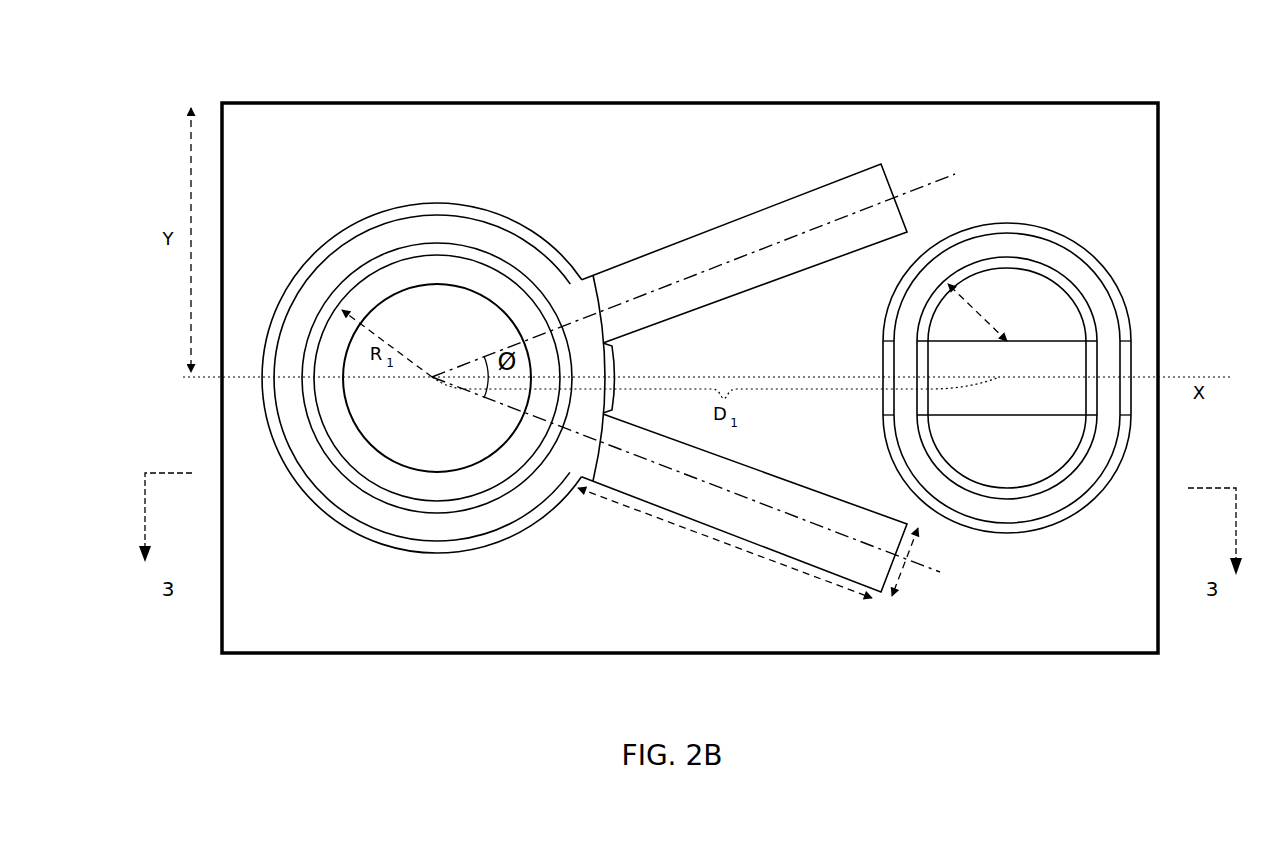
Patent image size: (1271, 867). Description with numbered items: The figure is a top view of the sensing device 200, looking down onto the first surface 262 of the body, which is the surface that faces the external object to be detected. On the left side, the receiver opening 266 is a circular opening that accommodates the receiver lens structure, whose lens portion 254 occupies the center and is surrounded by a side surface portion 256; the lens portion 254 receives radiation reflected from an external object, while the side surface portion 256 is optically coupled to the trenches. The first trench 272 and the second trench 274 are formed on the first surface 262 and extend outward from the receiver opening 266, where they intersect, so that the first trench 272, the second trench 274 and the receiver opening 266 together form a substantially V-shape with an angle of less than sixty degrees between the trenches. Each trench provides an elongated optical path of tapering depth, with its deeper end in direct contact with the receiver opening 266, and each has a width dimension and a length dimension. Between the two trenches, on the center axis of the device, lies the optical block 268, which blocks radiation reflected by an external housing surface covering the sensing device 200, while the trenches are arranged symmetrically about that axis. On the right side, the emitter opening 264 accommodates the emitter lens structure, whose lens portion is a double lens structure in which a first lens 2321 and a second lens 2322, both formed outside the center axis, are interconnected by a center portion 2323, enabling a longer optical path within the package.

The sensing device 200 is at (287, 74).
The lens portion 254 is at (428, 432).
The side surface portion 256 is at (357, 443).
The receiver opening 266 is at (357, 257).
The first surface 262 is at (688, 180).
The optical block 268 is at (773, 362).
The second trench 274 is at (723, 240).
The first trench 272 is at (682, 500).
The emitter opening 264 is at (1106, 329).
The first lens 2321 is at (1040, 298).
The second lens 2322 is at (1035, 447).
The center portion 2323 is at (1075, 370).